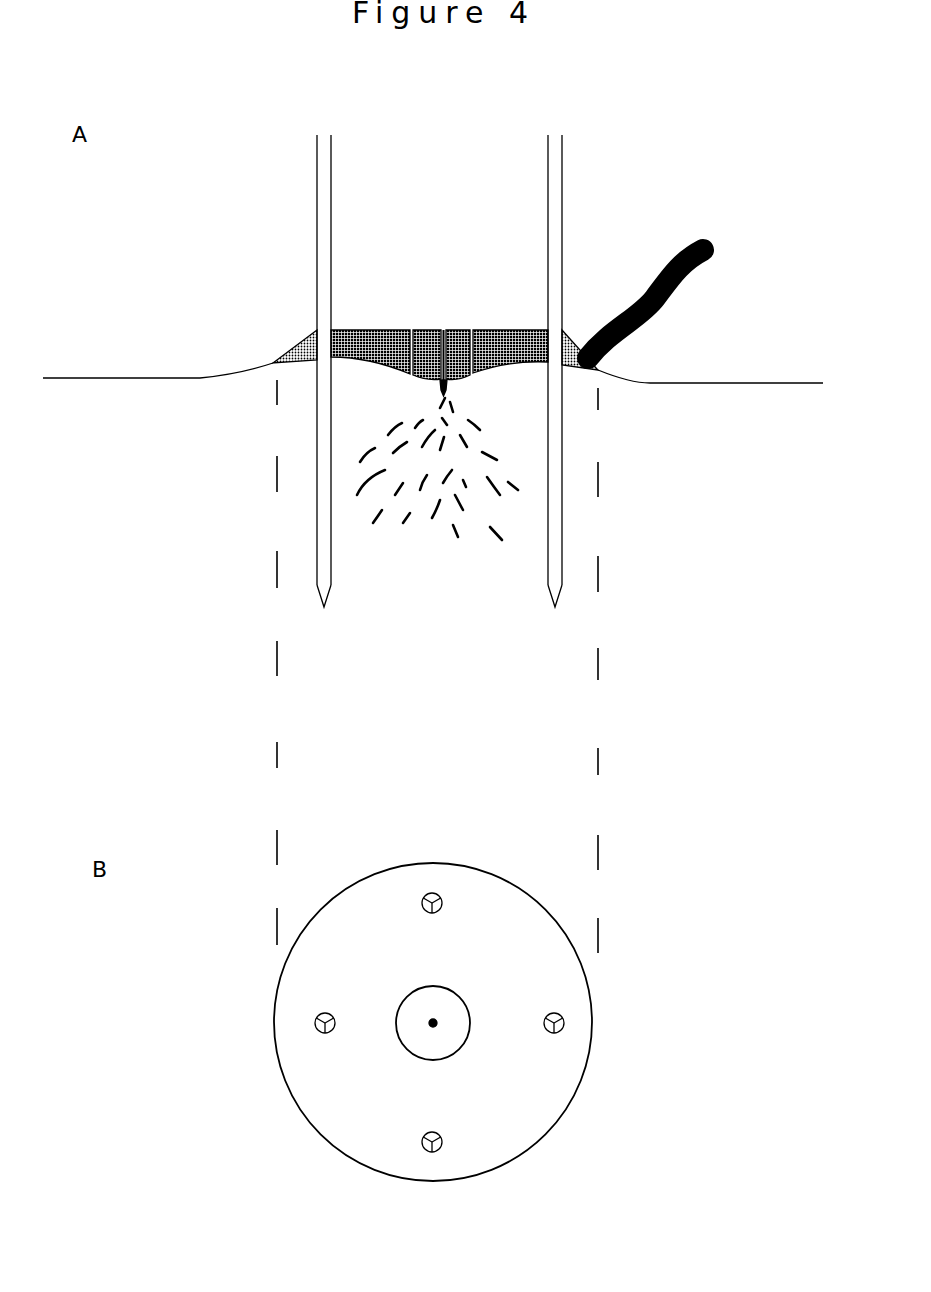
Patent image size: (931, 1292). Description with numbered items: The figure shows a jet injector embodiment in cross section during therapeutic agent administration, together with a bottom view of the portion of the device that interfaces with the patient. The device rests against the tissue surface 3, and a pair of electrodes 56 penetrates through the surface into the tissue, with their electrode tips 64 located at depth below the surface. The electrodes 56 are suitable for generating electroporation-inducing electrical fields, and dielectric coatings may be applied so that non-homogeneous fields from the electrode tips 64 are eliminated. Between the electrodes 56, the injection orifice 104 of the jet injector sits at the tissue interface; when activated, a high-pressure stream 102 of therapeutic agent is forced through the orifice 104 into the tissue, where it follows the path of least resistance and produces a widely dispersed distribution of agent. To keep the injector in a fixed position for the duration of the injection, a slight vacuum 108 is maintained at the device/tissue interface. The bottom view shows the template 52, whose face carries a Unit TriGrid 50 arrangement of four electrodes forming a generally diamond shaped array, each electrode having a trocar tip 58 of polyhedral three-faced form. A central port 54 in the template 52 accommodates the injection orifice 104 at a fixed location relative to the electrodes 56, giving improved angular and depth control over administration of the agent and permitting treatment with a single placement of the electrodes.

In FIG. 4A, the tissue surface 3 is at (120, 368).
In FIG. 4A, the electrodes 56 is at (302, 218).
In FIG. 4A, the electrode tips 64 is at (323, 608).
In FIG. 4A, the slight vacuum 108 is at (708, 243).
In FIG. 4A, the orifice 104 is at (447, 388).
In FIG. 4B, the orifice 104 is at (433, 1023).
In FIG. 4A, the high-pressure stream 102 is at (427, 533).
In FIG. 4B, the Unit TriGrid 50 is at (487, 852).
In FIG. 4B, the template 52 is at (357, 945).
In FIG. 4B, the ports 54 is at (463, 1040).
In FIG. 4B, the trocar tip 58 is at (313, 1020).